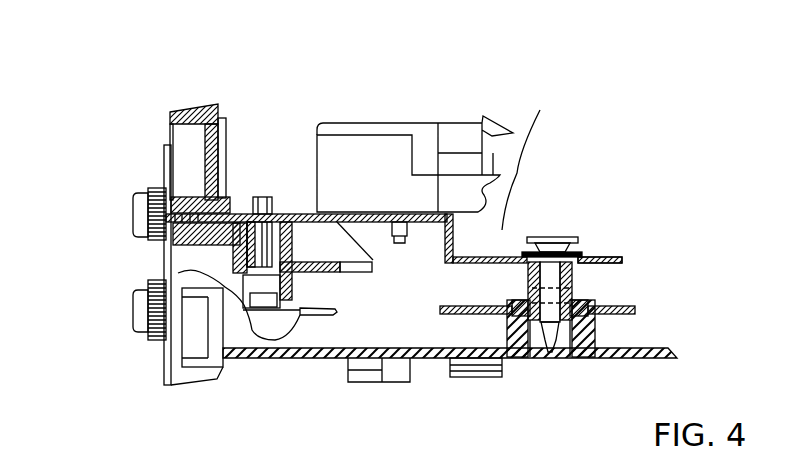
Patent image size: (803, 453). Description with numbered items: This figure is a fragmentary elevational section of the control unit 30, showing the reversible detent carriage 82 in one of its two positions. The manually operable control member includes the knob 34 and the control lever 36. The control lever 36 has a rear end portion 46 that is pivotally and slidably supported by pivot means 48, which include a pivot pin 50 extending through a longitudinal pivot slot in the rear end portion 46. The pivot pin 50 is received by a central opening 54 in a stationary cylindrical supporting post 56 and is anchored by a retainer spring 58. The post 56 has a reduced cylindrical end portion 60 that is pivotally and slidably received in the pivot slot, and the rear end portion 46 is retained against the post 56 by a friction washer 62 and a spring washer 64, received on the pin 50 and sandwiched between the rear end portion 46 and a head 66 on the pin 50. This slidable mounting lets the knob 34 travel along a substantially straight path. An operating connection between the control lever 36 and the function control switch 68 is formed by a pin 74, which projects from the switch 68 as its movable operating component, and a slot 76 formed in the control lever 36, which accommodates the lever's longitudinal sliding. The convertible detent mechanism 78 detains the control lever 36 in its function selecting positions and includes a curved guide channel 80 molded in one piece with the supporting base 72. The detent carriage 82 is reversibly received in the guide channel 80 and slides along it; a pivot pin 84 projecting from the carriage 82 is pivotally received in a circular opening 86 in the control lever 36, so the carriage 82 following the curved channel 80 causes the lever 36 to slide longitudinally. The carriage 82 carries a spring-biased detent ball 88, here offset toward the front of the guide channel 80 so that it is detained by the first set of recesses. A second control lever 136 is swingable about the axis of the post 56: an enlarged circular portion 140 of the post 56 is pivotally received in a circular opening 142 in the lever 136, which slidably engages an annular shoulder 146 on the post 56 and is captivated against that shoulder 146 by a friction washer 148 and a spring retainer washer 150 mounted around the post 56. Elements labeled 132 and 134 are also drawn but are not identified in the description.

The control unit 30 is at (130, 95).
The knob 34 is at (132, 210).
The control lever 36 is at (300, 210).
The rear end portion 46 is at (620, 257).
The pivot means 48 is at (576, 205).
The pivot pin 50 is at (585, 283).
The central opening 54 is at (520, 268).
The cylindrical supporting post 56 is at (585, 272).
The retainer spring 58 is at (577, 360).
The reduced cylindrical end portion 60 is at (580, 242).
The friction washer 62 is at (541, 163).
The spring washer 64 is at (585, 257).
The head 66 is at (547, 230).
The function control switch 68 is at (378, 112).
The supporting base 72 is at (673, 357).
The pin 74 is at (398, 230).
The slot 76 is at (373, 225).
The convertible detent mechanism 78 is at (256, 150).
The guide channel 80 is at (285, 252).
The reversible detent carriage 82 is at (265, 247).
The pivot pin 84 is at (233, 197).
The circular opening 86 is at (268, 196).
The detent ball 88 is at (292, 290).
The knob 132 is at (133, 307).
The spring arm 134 is at (297, 313).
The control lever 136 is at (477, 318).
The enlarged circular portion 140 is at (602, 318).
The circular opening 142 is at (520, 356).
The annular shoulder 146 is at (507, 305).
The friction washer 148 is at (588, 307).
The spring retainer washer 150 is at (528, 300).